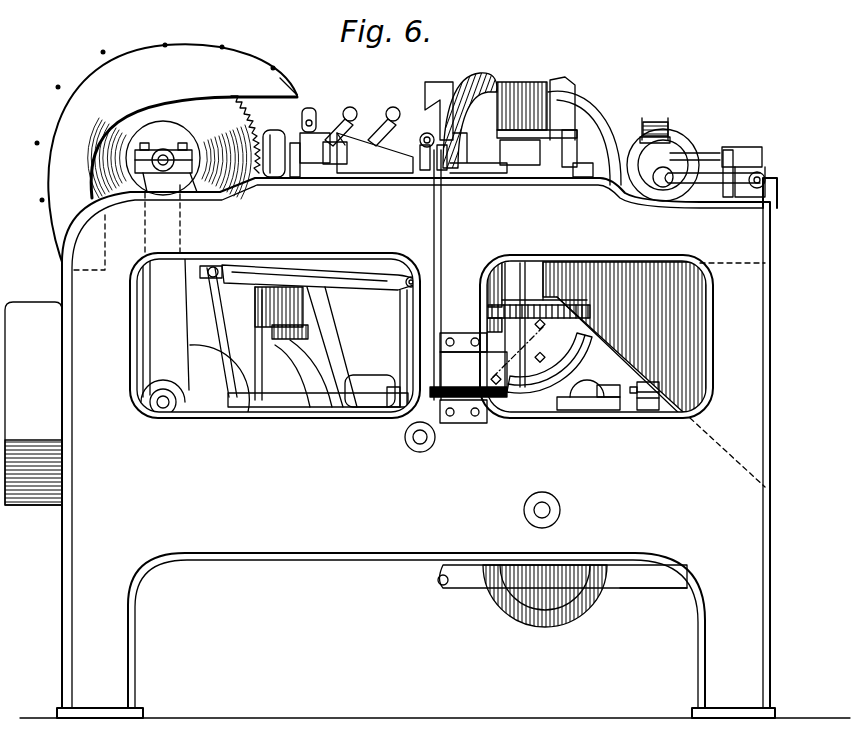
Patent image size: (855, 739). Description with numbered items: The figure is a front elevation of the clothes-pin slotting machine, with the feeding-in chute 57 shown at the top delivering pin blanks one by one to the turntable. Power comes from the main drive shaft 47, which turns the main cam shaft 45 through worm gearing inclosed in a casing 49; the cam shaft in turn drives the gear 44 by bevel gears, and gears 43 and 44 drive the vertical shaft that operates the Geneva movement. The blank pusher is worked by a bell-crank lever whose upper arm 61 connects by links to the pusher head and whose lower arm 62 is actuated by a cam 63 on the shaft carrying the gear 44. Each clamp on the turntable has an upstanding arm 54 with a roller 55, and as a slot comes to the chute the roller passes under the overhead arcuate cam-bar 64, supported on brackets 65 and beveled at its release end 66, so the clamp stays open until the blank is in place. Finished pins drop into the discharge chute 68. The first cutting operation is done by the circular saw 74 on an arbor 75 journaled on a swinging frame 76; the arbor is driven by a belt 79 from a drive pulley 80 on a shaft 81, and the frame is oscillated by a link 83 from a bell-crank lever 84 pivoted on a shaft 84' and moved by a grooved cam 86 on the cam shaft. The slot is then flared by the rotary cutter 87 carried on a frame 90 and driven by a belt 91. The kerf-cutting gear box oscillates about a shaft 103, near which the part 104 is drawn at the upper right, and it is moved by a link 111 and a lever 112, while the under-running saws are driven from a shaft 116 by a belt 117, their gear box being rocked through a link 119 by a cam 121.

The gear 43 is at (489, 309).
The gear 44 is at (580, 308).
The main cam shaft 45 is at (524, 510).
The main drive shaft 47 is at (6, 402).
The casing 49 is at (588, 410).
The upstanding arm 54 is at (320, 118).
The roller 55 is at (347, 130).
The feeding-in chute 57 is at (366, 128).
The upper arm 61 is at (442, 215).
The lower arm 62 is at (490, 422).
The cam 63 is at (588, 355).
The cam-bar 64 is at (513, 95).
The brackets 65 is at (462, 74).
The beveled release end 66 is at (421, 115).
The discharge chute 68 is at (684, 329).
The circular saw 74 is at (170, 158).
The arbor 75 is at (161, 150).
The frame 76 is at (166, 328).
The belt 79 is at (218, 321).
The drive pulley 80 is at (210, 400).
The shaft 81 is at (163, 396).
The link 83 is at (350, 288).
The bell-crank lever 84 is at (357, 347).
The shaft 84' is at (408, 455).
The cam 86 is at (533, 598).
The rotary cutter 87 is at (255, 120).
The frame 90 is at (318, 347).
The belt 91 is at (276, 130).
The shaft 103 is at (700, 150).
The bracket 104 is at (660, 120).
The link 111 is at (432, 574).
The lever 112 is at (645, 582).
The shaft 116 is at (725, 150).
The belt 117 is at (650, 120).
The link 119 is at (652, 408).
The cam 121 is at (558, 597).